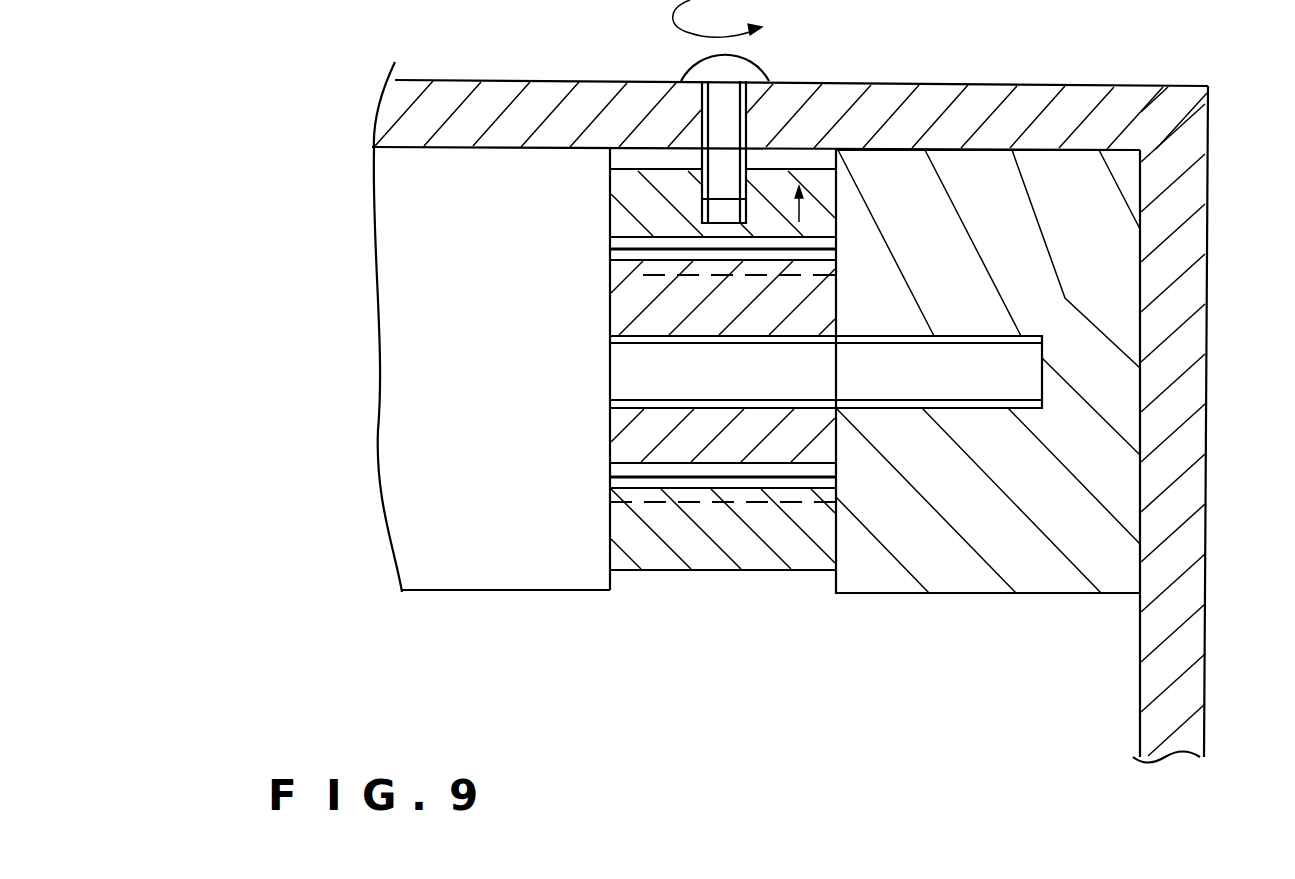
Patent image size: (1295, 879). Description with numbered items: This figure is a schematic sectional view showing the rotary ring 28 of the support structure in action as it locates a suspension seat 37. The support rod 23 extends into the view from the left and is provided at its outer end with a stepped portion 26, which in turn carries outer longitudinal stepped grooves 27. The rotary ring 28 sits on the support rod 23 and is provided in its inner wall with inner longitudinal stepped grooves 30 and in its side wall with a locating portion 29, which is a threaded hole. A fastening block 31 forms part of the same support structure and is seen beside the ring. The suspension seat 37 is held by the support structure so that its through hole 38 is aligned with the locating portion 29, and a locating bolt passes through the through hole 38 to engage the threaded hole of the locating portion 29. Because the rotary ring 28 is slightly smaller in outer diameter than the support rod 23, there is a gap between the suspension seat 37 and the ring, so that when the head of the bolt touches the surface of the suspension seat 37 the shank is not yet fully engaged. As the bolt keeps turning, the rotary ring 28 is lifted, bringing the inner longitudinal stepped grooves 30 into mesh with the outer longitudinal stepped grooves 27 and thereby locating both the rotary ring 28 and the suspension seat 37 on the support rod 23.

The support rod 23 is at (520, 560).
The stepped portion 26 is at (662, 312).
The outer longitudinal stepped grooves 27 is at (662, 270).
The rotary ring 28 is at (738, 548).
The locating portion 29 is at (717, 220).
The inner longitudinal stepped grooves 30 is at (660, 243).
The fastening block 31 is at (961, 568).
The suspension seat 37 is at (1182, 350).
The through hole 38 is at (797, 81).